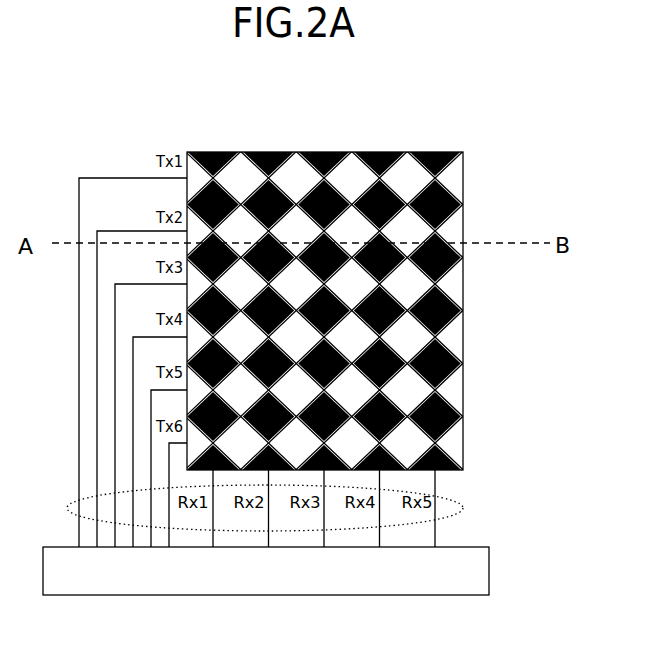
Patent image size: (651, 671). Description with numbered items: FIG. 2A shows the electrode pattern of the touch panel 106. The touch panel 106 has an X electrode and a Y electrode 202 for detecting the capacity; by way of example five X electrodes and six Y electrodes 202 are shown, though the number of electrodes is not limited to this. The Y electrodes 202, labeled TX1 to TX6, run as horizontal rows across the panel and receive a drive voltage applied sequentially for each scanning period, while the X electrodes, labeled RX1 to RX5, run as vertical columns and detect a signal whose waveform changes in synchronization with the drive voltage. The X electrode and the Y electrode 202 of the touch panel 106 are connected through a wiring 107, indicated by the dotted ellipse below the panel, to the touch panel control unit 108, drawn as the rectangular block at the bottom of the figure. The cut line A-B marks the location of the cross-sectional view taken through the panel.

The touch panel 106 is at (463, 152).
The Y electrode 202 is at (453, 228).
The wiring 107 is at (458, 498).
The touch panel control unit 108 is at (473, 572).